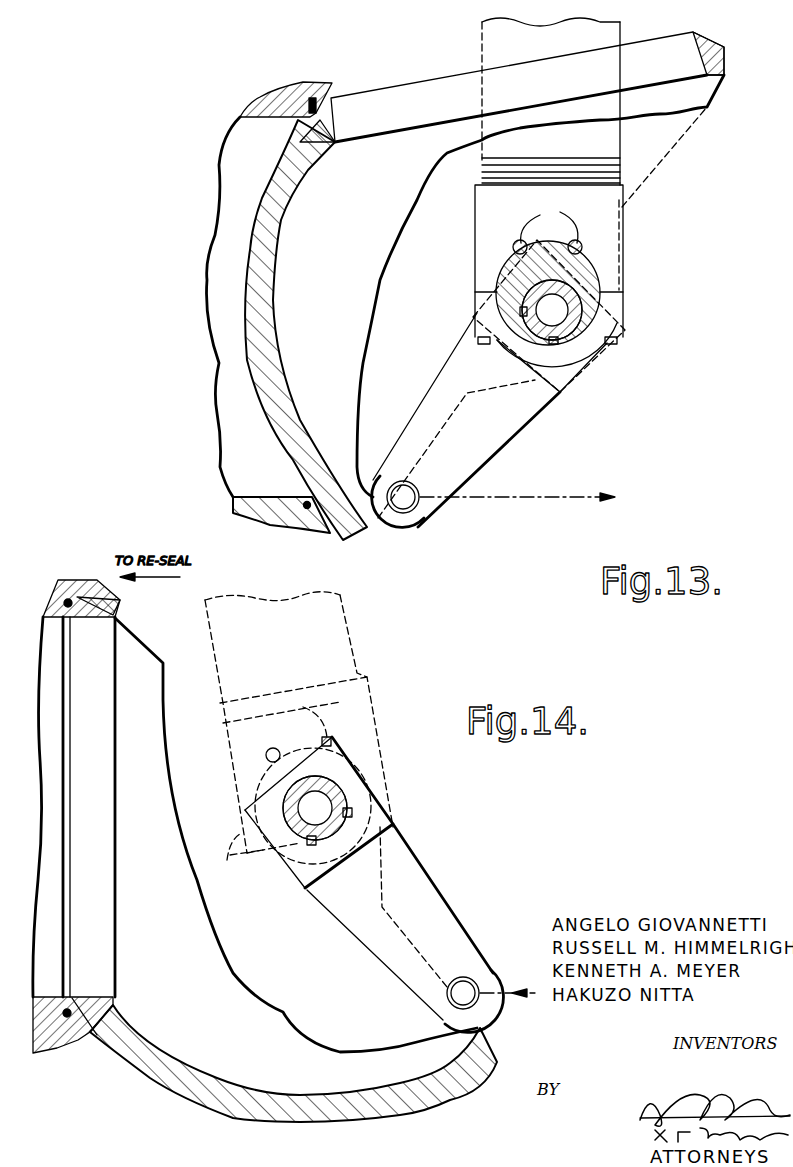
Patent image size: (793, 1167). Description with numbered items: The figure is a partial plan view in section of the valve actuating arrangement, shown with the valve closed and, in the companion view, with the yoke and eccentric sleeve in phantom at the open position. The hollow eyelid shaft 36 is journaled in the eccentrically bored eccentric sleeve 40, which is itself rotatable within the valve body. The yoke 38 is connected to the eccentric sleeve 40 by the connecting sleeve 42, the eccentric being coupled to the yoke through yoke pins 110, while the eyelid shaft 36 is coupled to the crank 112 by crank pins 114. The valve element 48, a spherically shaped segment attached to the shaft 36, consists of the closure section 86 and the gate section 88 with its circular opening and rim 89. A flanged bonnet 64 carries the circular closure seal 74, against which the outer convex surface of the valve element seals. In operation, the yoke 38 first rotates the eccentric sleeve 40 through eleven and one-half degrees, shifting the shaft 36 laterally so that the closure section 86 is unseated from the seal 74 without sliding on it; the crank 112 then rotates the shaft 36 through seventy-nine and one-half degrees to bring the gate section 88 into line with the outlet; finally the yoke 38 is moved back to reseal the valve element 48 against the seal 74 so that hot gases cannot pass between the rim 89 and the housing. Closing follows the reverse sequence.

In FIG. 13, the eyelid shaft 36 is at (582, 280).
In FIG. 14, the eyelid shaft 36 is at (320, 778).
In FIG. 13, the yoke 38 is at (624, 150).
In FIG. 14, the yoke 38 is at (352, 630).
In FIG. 13, the eccentric sleeve 40 is at (585, 265).
In FIG. 14, the eccentric sleeve 40 is at (390, 787).
In FIG. 13, the connecting sleeve 42 is at (607, 313).
In FIG. 14, the connecting sleeve 42 is at (238, 860).
In FIG. 13, the valve element 48 is at (254, 221).
In FIG. 14, the valve element 48 is at (152, 1076).
In FIG. 13, the flanged bonnet 64 is at (258, 108).
In FIG. 14, the flanged bonnet 64 is at (50, 1047).
In FIG. 13, the closure seal 74 is at (315, 97).
In FIG. 14, the closure seal 74 is at (69, 598).
In FIG. 13, the closure section 86 is at (258, 300).
In FIG. 14, the closure section 86 is at (250, 1100).
In FIG. 13, the gate section 88 is at (388, 100).
In FIG. 14, the gate section 88 is at (100, 932).
In FIG. 13, the rim 89 is at (320, 120).
In FIG. 14, the rim 89 is at (116, 610).
In FIG. 13, the yoke pins 110 is at (549, 217).
In FIG. 14, the yoke pins 110 is at (275, 748).
In FIG. 13, the crank 112 is at (505, 424).
In FIG. 14, the crank 112 is at (420, 893).
In FIG. 13, the crank pins 114 is at (522, 312).
In FIG. 14, the crank pins 114 is at (357, 810).